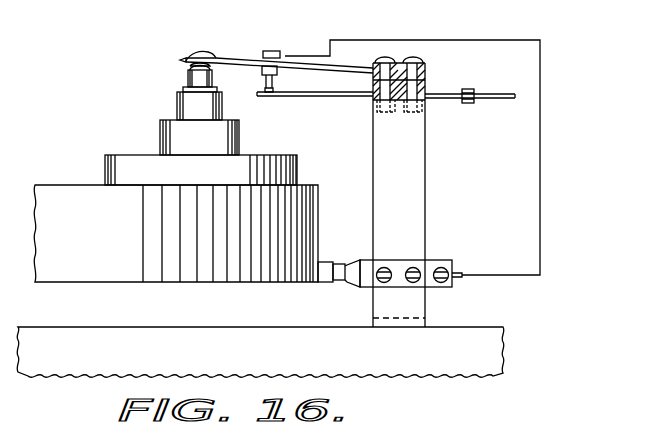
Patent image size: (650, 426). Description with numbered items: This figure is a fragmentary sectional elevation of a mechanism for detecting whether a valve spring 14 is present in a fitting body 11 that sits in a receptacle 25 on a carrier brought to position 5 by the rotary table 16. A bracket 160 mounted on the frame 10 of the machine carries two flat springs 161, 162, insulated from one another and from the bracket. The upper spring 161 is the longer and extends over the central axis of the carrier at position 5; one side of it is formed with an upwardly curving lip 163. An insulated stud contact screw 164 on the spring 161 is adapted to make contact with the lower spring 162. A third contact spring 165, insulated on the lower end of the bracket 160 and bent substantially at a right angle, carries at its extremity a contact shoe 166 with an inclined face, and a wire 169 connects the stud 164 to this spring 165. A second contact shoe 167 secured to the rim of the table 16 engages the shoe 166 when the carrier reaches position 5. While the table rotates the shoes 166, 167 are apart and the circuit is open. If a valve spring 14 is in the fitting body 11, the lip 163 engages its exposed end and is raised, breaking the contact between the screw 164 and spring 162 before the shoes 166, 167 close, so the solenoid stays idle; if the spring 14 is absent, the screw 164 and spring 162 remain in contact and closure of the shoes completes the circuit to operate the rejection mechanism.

The carrier position 5 is at (105, 163).
The frame 10 is at (476, 327).
The fitting body 11 is at (187, 78).
The valve spring 14 is at (188, 58).
The table 16 is at (318, 207).
The receptacle 25 is at (177, 112).
The bracket 160 is at (426, 205).
The flat spring 161 is at (236, 59).
The flat spring 162 is at (286, 97).
The upwardly curving lip 163 is at (206, 52).
The insulated stud contact screw 164 is at (278, 52).
The third contact spring 165 is at (438, 260).
The contact shoe 166 is at (337, 282).
The contact shoe 167 is at (322, 283).
The wire 169 is at (540, 215).